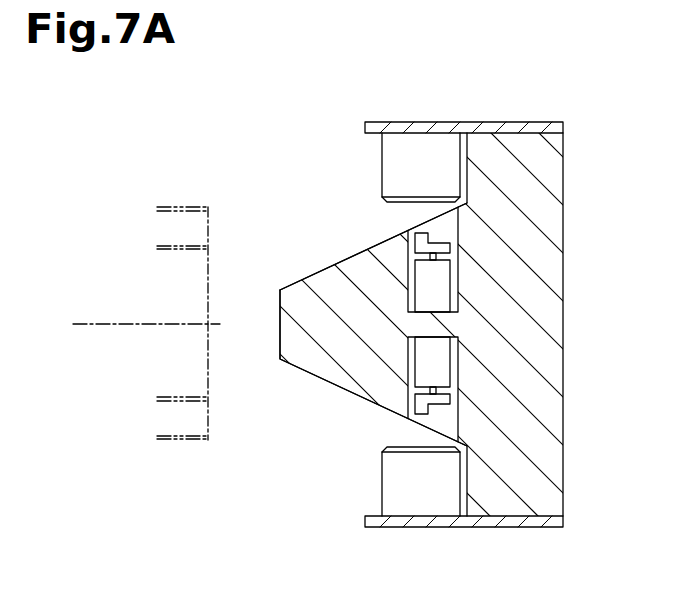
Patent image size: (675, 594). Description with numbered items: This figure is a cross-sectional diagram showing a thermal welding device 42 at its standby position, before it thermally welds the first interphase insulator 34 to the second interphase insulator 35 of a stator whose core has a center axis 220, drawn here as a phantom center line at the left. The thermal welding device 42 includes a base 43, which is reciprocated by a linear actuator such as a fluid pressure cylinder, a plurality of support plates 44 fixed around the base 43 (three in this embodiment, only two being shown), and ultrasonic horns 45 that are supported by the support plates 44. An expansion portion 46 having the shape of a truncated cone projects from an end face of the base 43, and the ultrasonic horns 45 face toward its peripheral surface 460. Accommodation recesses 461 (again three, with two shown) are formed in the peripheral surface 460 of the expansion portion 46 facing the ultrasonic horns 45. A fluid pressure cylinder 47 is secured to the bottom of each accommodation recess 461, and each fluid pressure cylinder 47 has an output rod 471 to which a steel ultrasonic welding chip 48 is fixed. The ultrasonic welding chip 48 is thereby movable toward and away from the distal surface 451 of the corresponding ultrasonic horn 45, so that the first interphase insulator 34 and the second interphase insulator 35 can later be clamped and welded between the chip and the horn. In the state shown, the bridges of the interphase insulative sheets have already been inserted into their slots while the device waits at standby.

The thermal welding device 42 is at (589, 106).
The base 43 is at (556, 318).
The support plates 44 is at (435, 122).
The ultrasonic horns 45 is at (388, 156).
The distal surface 451 is at (398, 206).
The expansion portion 46 is at (290, 338).
The peripheral surface 460 is at (333, 265).
The accommodation recesses 461 is at (456, 228).
The fluid pressure cylinder 47 is at (415, 290).
The output rod 471 is at (440, 258).
The ultrasonic welding chip 48 is at (416, 226).
The center axis 220 is at (137, 324).
The first interphase insulator 34 is at (173, 207).
The second interphase insulator 35 is at (187, 402).